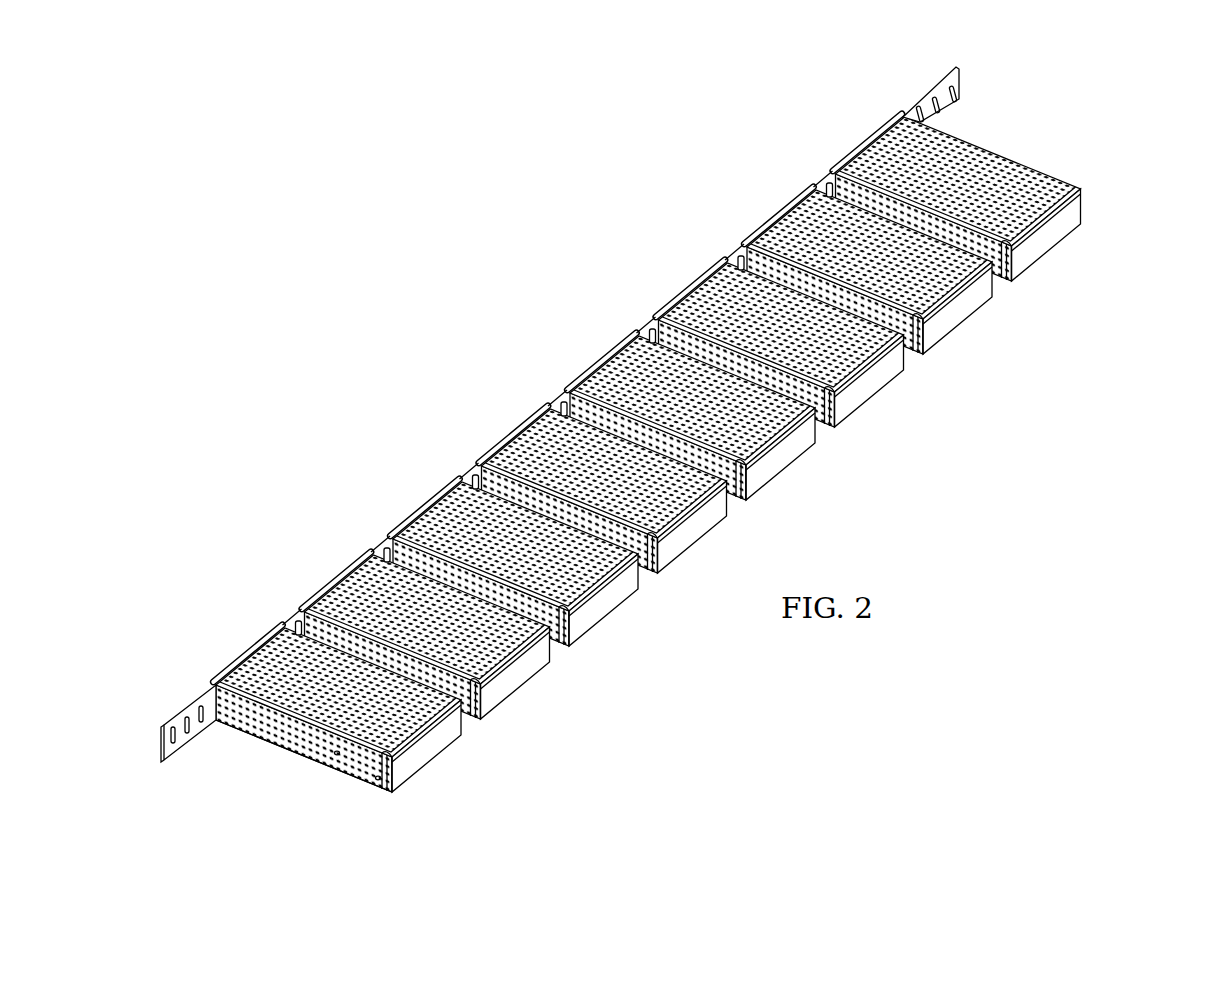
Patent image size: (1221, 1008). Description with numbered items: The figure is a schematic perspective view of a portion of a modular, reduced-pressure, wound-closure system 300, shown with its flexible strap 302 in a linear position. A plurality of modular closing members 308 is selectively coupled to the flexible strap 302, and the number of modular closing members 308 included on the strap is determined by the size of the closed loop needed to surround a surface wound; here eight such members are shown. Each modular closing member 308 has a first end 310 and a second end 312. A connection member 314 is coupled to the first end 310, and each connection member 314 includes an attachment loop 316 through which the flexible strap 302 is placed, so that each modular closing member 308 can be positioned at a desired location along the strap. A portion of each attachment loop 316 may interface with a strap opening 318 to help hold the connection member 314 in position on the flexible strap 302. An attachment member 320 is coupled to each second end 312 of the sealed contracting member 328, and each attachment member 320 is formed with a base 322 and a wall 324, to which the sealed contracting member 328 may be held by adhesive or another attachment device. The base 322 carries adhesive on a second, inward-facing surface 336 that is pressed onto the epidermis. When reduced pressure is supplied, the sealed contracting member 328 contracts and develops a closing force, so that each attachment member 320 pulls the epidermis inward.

The modular, reduced-pressure, wound-closure system 300 is at (1151, 111).
The flexible strap 302 is at (923, 96).
The modular closing member 308 is at (477, 731).
The first end 310 is at (205, 722).
The second end 312 is at (378, 780).
The connection member 314 is at (214, 662).
The attachment loop 316 is at (252, 652).
The strap opening 318 is at (176, 716).
The attachment member 320 is at (431, 754).
The base 322 is at (560, 648).
The wall 324 is at (403, 779).
The sealed contracting member 328 is at (337, 755).
The second, inward-facing surface 336 is at (388, 794).